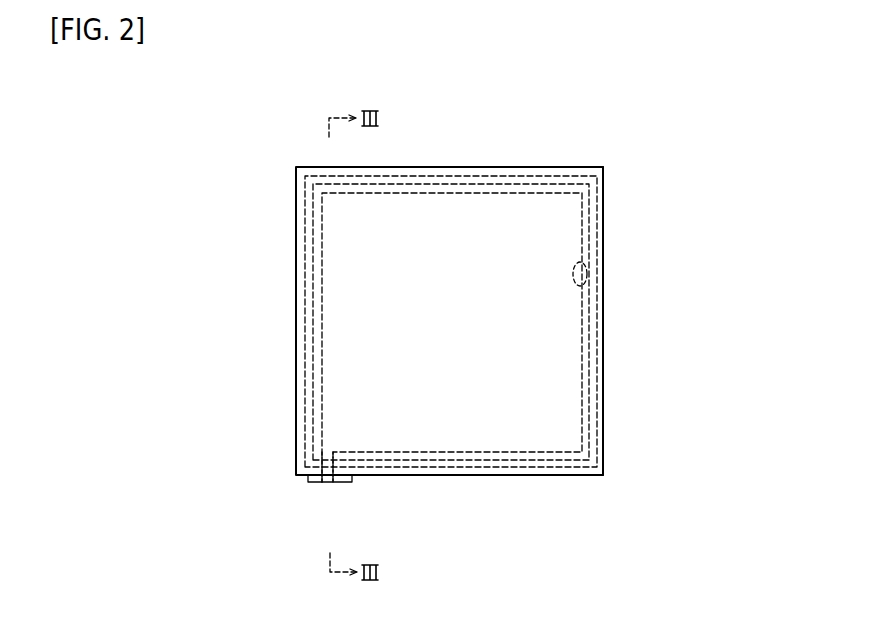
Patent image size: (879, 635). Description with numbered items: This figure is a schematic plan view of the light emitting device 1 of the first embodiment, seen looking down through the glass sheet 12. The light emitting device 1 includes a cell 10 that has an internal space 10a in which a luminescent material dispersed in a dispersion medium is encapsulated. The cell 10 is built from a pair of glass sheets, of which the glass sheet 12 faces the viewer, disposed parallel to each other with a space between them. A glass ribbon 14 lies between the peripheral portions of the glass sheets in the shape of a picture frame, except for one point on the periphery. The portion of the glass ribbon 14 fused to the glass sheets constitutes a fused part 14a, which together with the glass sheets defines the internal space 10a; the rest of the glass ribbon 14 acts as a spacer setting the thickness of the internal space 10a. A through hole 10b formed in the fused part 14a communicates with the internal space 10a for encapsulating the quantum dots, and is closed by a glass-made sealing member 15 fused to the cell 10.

The light emitting device 1 is at (630, 122).
The cell 10 is at (489, 167).
The internal space 10a is at (588, 283).
The through hole 10b is at (325, 478).
The glass sheet 12 is at (604, 218).
The glass ribbon 14 is at (604, 387).
The fused part 14a is at (598, 340).
The sealing member 15 is at (315, 483).